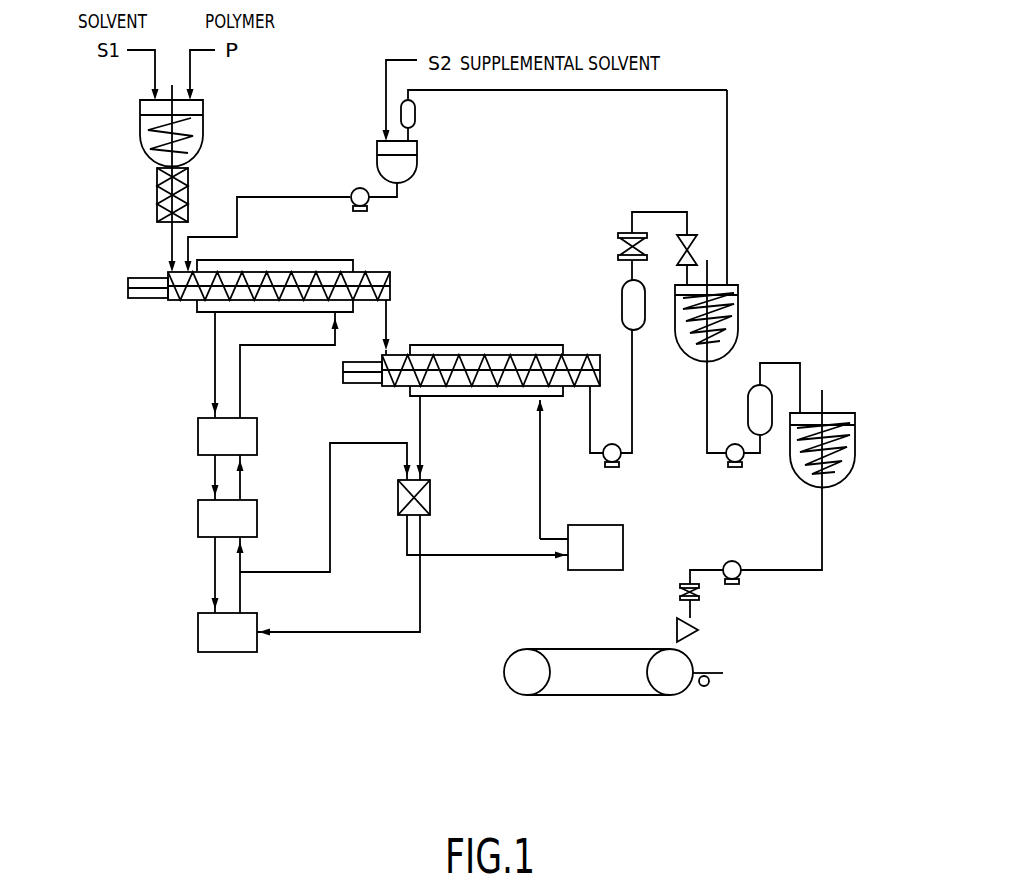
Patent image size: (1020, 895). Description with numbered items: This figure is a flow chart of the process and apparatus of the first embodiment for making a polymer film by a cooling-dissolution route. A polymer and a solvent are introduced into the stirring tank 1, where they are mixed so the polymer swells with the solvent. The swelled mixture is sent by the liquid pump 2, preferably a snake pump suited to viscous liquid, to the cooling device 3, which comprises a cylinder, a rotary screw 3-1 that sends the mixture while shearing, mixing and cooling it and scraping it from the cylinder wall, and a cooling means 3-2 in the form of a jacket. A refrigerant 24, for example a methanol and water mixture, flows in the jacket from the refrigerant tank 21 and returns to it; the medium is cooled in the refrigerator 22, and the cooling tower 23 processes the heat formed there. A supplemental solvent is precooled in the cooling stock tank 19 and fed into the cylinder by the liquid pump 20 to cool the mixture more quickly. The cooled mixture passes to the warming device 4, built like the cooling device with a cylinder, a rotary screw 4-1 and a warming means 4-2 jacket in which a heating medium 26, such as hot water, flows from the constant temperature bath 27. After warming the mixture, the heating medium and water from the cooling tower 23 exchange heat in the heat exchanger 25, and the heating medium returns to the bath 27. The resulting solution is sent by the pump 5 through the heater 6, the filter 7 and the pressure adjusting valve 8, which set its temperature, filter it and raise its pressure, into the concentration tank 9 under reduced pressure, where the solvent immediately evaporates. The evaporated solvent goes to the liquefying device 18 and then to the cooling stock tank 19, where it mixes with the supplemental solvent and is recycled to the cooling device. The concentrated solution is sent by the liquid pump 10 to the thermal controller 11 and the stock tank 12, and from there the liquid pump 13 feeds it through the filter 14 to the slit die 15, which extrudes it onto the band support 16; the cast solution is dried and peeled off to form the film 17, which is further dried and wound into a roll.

The stirring tank 1 is at (125, 153).
The liquid pump 2 is at (126, 220).
The cooling device 3 is at (356, 210).
The rotary screw 3-1 is at (336, 260).
The cooling means 3-2 is at (275, 210).
The warming device 4 is at (476, 399).
The rotary screw 4-1 is at (491, 436).
The warming means 4-2 is at (490, 338).
The pump 5 is at (651, 416).
The heater 6 is at (661, 335).
The filter 7 is at (652, 208).
The pressure adjusting valve 8 is at (748, 192).
The concentration tank 9 is at (780, 271).
The liquid pump 10 is at (764, 472).
The thermal controller 11 is at (819, 367).
The stock tank 12 is at (813, 488).
The liquid pump 13 is at (756, 597).
The filter 14 is at (625, 599).
The slit die 15 is at (623, 630).
The band support 16 is at (577, 705).
The film 17 is at (747, 694).
The liquefying device 18 is at (564, 115).
The cooling stock tank 19 is at (459, 178).
The liquid pump 20 is at (346, 138).
The refrigerant tank 21 is at (162, 425).
The refrigerator 22 is at (159, 519).
The cooling tower 23 is at (171, 616).
The refrigerant 24 is at (328, 489).
The heat exchanger 25 is at (375, 551).
The heating medium 26 is at (511, 469).
The constant temperature bath 27 is at (684, 544).